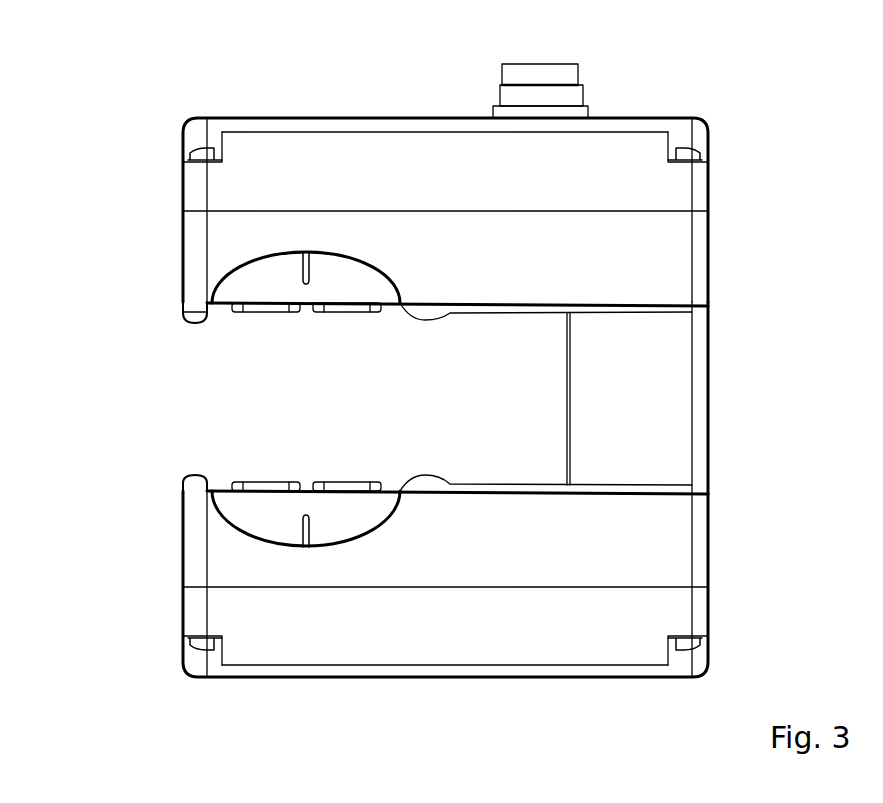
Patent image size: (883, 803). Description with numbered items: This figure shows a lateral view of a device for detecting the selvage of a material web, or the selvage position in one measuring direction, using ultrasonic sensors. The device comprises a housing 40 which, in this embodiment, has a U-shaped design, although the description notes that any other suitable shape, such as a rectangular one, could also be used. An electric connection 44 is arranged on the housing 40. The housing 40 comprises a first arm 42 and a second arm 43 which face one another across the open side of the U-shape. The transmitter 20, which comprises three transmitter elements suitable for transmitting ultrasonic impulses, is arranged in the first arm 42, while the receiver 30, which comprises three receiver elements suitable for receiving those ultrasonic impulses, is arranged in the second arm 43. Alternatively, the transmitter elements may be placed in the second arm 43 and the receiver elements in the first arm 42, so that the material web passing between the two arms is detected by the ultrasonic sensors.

The transmitter 20 is at (265, 327).
The receiver 30 is at (297, 472).
The housing 40 is at (454, 401).
The first arm 42 is at (308, 148).
The second arm 43 is at (267, 648).
The electric connection 44 is at (556, 76).